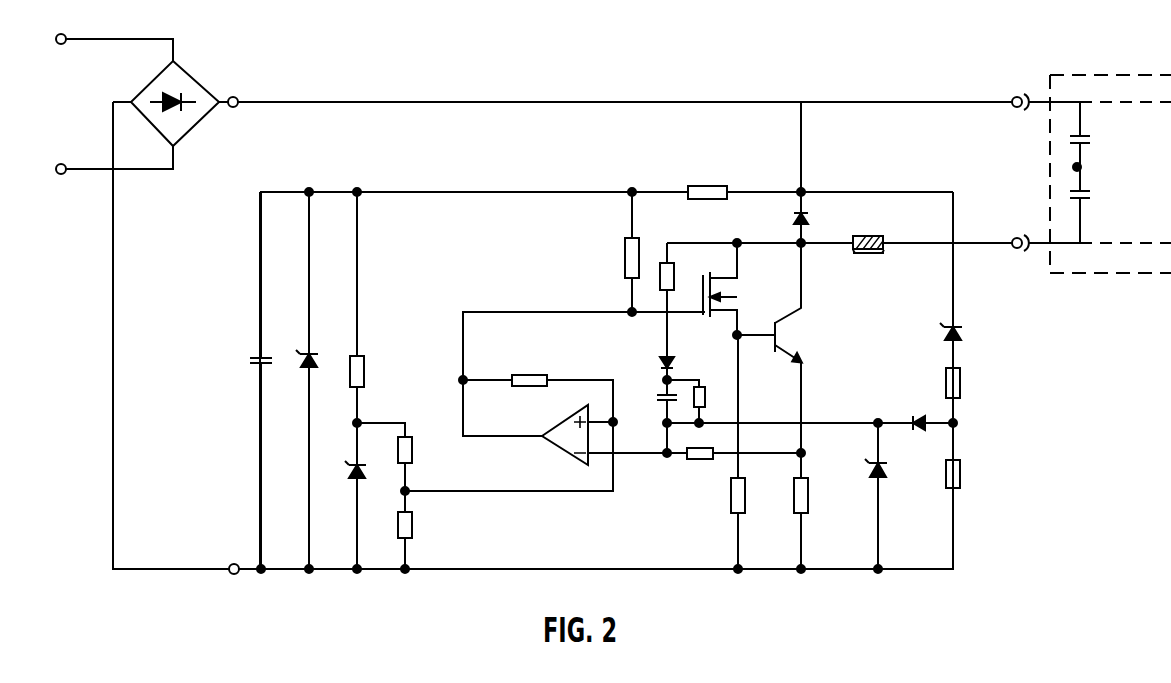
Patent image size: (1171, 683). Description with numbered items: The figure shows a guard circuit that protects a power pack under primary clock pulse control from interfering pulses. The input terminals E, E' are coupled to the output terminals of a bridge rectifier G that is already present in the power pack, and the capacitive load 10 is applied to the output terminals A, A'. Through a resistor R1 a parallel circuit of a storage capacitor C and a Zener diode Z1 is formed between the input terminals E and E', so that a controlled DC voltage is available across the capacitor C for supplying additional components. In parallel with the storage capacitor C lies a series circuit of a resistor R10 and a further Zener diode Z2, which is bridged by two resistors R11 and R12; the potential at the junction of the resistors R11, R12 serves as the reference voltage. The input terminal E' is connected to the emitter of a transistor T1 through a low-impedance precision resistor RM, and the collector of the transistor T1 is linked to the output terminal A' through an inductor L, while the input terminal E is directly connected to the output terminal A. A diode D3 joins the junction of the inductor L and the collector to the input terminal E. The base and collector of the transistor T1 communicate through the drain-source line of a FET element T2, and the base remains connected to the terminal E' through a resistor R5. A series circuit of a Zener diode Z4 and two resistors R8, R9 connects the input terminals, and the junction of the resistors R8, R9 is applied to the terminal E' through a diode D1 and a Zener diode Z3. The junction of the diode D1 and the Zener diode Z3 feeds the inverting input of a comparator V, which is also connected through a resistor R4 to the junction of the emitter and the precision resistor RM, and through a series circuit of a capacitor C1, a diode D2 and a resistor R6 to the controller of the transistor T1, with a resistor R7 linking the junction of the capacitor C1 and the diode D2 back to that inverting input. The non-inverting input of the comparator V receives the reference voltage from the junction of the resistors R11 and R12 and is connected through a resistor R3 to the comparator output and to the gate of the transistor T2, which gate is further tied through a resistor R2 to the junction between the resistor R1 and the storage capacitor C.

The capacitive load 10 is at (1081, 167).
The bridge rectifier G is at (137, 104).
The input terminal E is at (615, 87).
The input terminal E' is at (533, 338).
The output terminal A is at (1040, 88).
The output terminal A' is at (1040, 231).
The storage capacitor C is at (243, 380).
The capacitor C1 is at (652, 416).
The Zener diode Z1 is at (319, 380).
The Zener diode Z2 is at (365, 496).
The Zener diode Z3 is at (893, 496).
The Zener diode Z4 is at (969, 280).
The resistor R1 is at (707, 177).
The resistor R2 is at (615, 252).
The resistor R3 is at (509, 417).
The resistor R4 is at (734, 471).
The resistor R5 is at (751, 452).
The resistor R6 is at (698, 300).
The resistor R7 is at (700, 401).
The resistor R8 is at (968, 395).
The resistor R9 is at (968, 496).
The resistor R10 is at (376, 307).
The resistor R11 is at (422, 464).
The resistor R12 is at (422, 530).
The precision resistor RM is at (817, 465).
The diode D1 is at (915, 408).
The diode D2 is at (650, 365).
The diode D3 is at (785, 172).
The transistor T1 is at (785, 302).
The FET element T2 is at (734, 289).
The inductor L is at (874, 232).
The comparator V is at (563, 445).